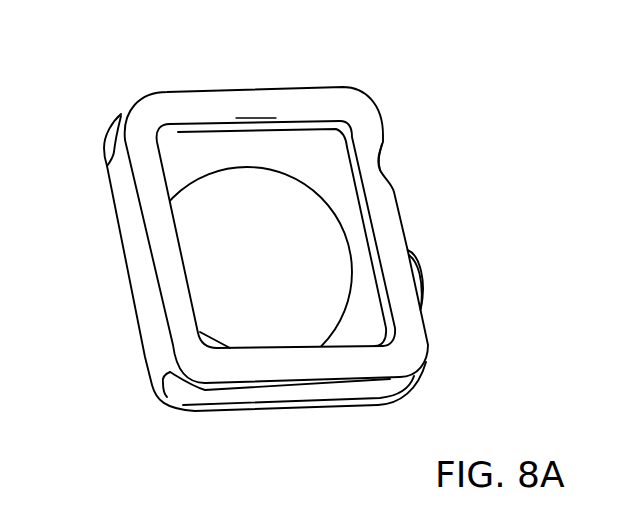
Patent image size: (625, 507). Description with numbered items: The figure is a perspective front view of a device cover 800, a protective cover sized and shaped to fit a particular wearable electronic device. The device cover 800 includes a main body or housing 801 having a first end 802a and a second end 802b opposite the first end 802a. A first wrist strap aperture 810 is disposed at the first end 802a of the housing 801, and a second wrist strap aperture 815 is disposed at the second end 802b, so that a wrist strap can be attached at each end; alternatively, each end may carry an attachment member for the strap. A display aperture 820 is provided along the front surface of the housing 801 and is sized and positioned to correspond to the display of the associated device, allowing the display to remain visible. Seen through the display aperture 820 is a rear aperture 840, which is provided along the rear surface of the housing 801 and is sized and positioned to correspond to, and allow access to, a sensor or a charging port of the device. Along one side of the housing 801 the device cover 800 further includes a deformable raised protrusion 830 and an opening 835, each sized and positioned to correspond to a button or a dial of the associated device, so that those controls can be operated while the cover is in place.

The device cover 800 is at (270, 248).
The housing 801 is at (256, 107).
The first end 802a is at (166, 88).
The second end 802b is at (233, 421).
The first wrist strap aperture 810 is at (105, 136).
The second wrist strap aperture 815 is at (303, 405).
The display aperture 820 is at (294, 214).
The deformable raised protrusion 830 is at (428, 273).
The opening 835 is at (392, 175).
The rear aperture 840 is at (362, 297).